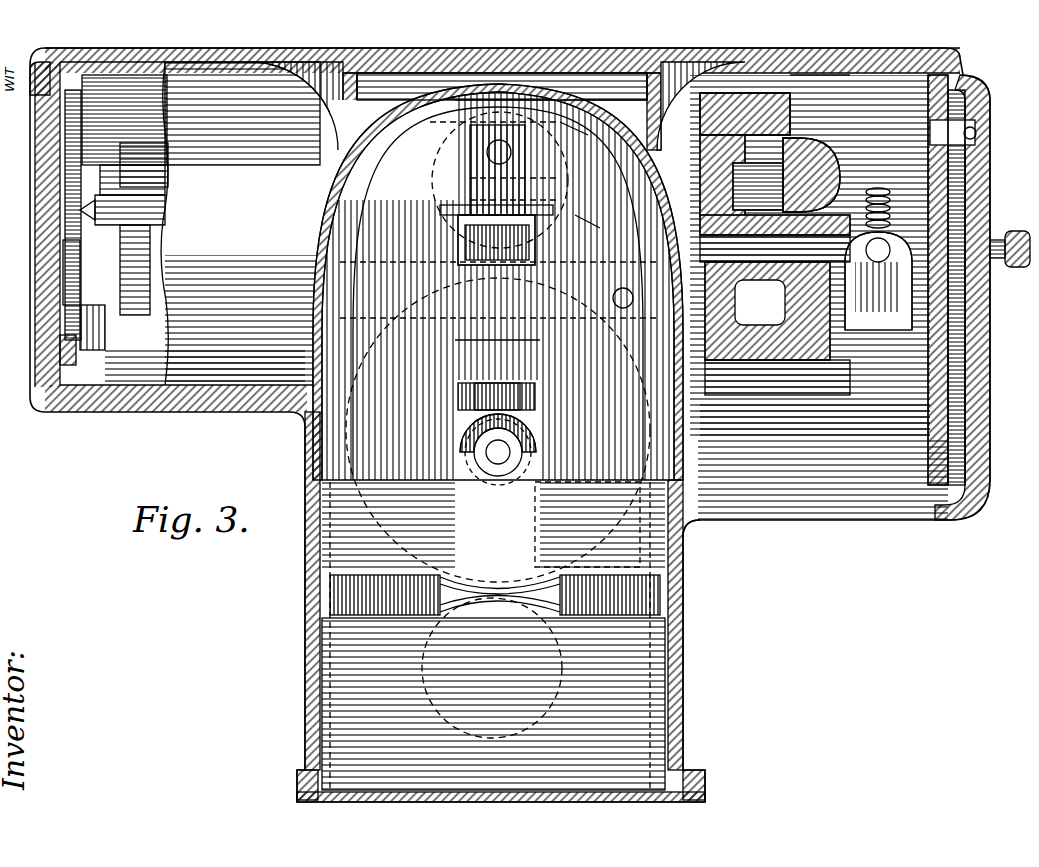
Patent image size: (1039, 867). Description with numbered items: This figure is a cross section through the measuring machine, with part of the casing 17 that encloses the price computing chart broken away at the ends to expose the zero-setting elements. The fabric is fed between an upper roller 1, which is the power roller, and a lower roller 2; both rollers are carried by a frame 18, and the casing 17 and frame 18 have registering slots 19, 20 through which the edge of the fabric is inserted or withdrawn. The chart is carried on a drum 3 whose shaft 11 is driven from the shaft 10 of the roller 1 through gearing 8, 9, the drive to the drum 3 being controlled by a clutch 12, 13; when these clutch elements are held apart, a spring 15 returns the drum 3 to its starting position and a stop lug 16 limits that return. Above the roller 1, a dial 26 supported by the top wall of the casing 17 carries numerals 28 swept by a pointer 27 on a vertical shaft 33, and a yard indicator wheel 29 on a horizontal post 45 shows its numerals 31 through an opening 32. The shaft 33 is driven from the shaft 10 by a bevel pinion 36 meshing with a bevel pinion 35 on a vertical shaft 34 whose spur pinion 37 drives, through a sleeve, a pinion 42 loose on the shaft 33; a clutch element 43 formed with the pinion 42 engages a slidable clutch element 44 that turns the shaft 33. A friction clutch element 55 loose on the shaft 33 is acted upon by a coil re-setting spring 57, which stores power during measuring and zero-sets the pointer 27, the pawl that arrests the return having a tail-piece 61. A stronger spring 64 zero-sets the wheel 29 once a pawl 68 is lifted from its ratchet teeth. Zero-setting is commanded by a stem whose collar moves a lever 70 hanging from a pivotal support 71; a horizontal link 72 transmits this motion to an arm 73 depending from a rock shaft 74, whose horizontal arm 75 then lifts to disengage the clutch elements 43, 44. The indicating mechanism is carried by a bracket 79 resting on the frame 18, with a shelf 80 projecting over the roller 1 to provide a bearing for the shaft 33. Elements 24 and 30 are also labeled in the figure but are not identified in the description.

The upper roller 1 is at (492, 600).
The lower roller 2 is at (495, 610).
The drum 3 is at (790, 86).
The gearing 8 is at (172, 123).
The gearing 9 is at (918, 325).
The shaft 10 is at (497, 456).
The shaft 11 is at (465, 228).
The clutch element 12 is at (800, 150).
The clutch element 13 is at (845, 165).
The spring 15 is at (168, 170).
The stop lug 16 is at (33, 356).
The casing 17 is at (685, 557).
The frame 18 is at (632, 680).
The slot 19 is at (680, 586).
The slot 20 is at (632, 612).
The curved wall 24 is at (172, 90).
The dial 26 is at (535, 85).
The pointer 27 is at (495, 82).
The numerals 28 is at (588, 100).
The yard indicator wheel 29 is at (512, 145).
The connector 30 is at (588, 127).
The numerals 31 is at (455, 340).
The opening 32 is at (430, 122).
The vertical shaft 33 is at (590, 225).
The vertical shaft 34 is at (455, 358).
The bevel pinion 35 is at (537, 398).
The bevel pinion 36 is at (538, 445).
The spur pinion 37 is at (463, 231).
The pinion 42 is at (438, 160).
The clutch element 43 is at (508, 160).
The clutch element 44 is at (470, 178).
The horizontal post 45 is at (430, 143).
The friction clutch element 55 is at (470, 200).
The coil re-setting spring 57 is at (536, 208).
The tail-piece 61 is at (845, 253).
The spring 64 is at (1008, 238).
The pawl 68 is at (988, 276).
The lever 70 is at (978, 367).
The pivotal support 71 is at (978, 134).
The horizontal link 72 is at (790, 410).
The arm 73 is at (580, 340).
The rock shaft 74 is at (623, 288).
The horizontal arm 75 is at (605, 318).
The bracket 79 is at (536, 170).
The shelf 80 is at (380, 262).